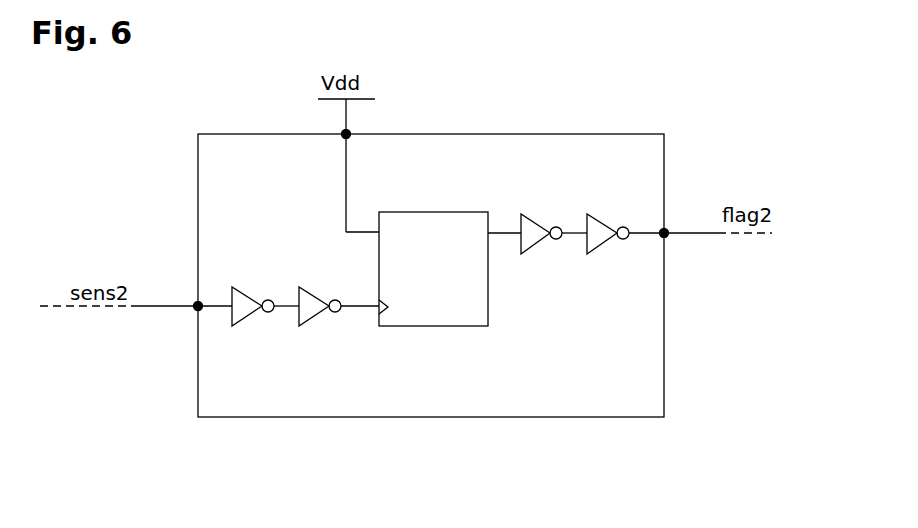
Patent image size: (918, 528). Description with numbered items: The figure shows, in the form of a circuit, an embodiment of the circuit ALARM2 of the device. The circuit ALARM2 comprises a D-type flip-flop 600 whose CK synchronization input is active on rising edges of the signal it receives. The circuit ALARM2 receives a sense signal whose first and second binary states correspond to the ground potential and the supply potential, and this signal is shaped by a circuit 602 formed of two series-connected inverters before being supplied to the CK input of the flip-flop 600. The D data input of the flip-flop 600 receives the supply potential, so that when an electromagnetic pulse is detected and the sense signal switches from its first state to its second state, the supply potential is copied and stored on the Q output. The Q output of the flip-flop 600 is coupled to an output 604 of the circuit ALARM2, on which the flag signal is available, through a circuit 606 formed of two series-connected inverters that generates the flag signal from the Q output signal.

The D-type flip-flop 600 is at (437, 228).
The circuit 602 is at (271, 264).
The output 604 is at (667, 236).
The circuit 606 is at (568, 192).
The circuit ALARM2 is at (415, 438).